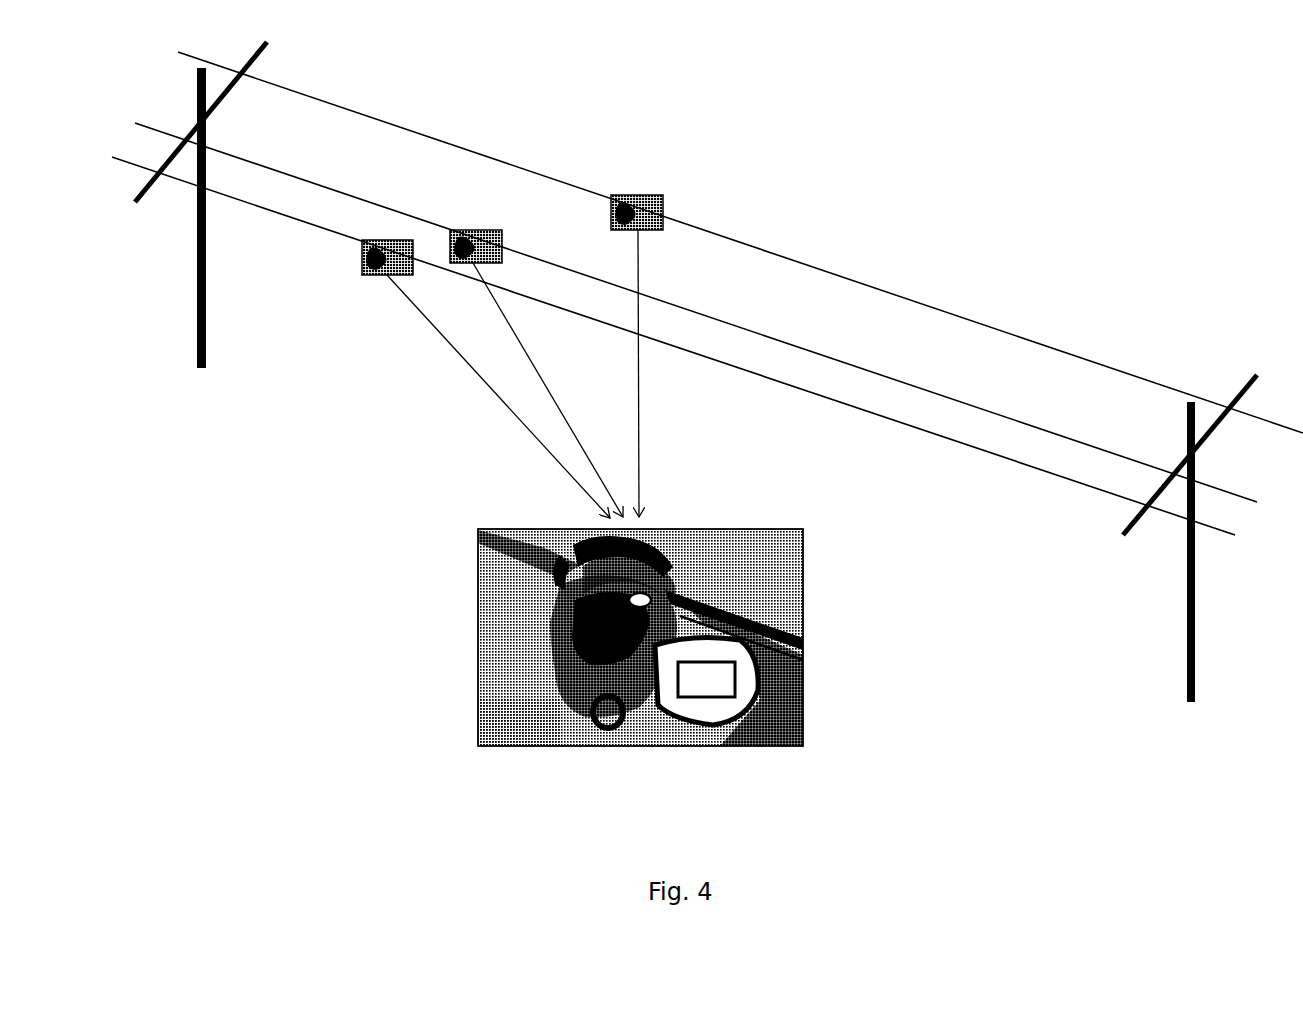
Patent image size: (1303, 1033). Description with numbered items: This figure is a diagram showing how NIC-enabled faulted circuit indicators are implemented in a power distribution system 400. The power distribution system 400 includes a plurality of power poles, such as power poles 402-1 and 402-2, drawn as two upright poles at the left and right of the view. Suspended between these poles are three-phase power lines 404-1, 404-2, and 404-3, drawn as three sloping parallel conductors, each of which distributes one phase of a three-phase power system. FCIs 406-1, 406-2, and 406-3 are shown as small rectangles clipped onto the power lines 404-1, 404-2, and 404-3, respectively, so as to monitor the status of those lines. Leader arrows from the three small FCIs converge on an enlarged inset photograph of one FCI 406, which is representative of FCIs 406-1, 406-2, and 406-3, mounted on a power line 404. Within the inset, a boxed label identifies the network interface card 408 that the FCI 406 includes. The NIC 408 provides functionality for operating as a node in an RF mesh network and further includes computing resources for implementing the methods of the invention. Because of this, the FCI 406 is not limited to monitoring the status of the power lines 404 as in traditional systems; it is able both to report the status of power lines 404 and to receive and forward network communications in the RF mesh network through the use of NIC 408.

The power distribution system 400 is at (960, 260).
The power pole 402-1 is at (203, 216).
The power pole 402-2 is at (1191, 548).
The power line 404-1 is at (673, 346).
The power line 404-2 is at (696, 312).
The power line 404-3 is at (740, 242).
The FCI 406-1 is at (445, 379).
The FCI 406-2 is at (536, 368).
The FCI 406-3 is at (663, 351).
The power line 404 is at (529, 557).
The FCI 406 is at (640, 637).
The network interface card 408 is at (706, 679).